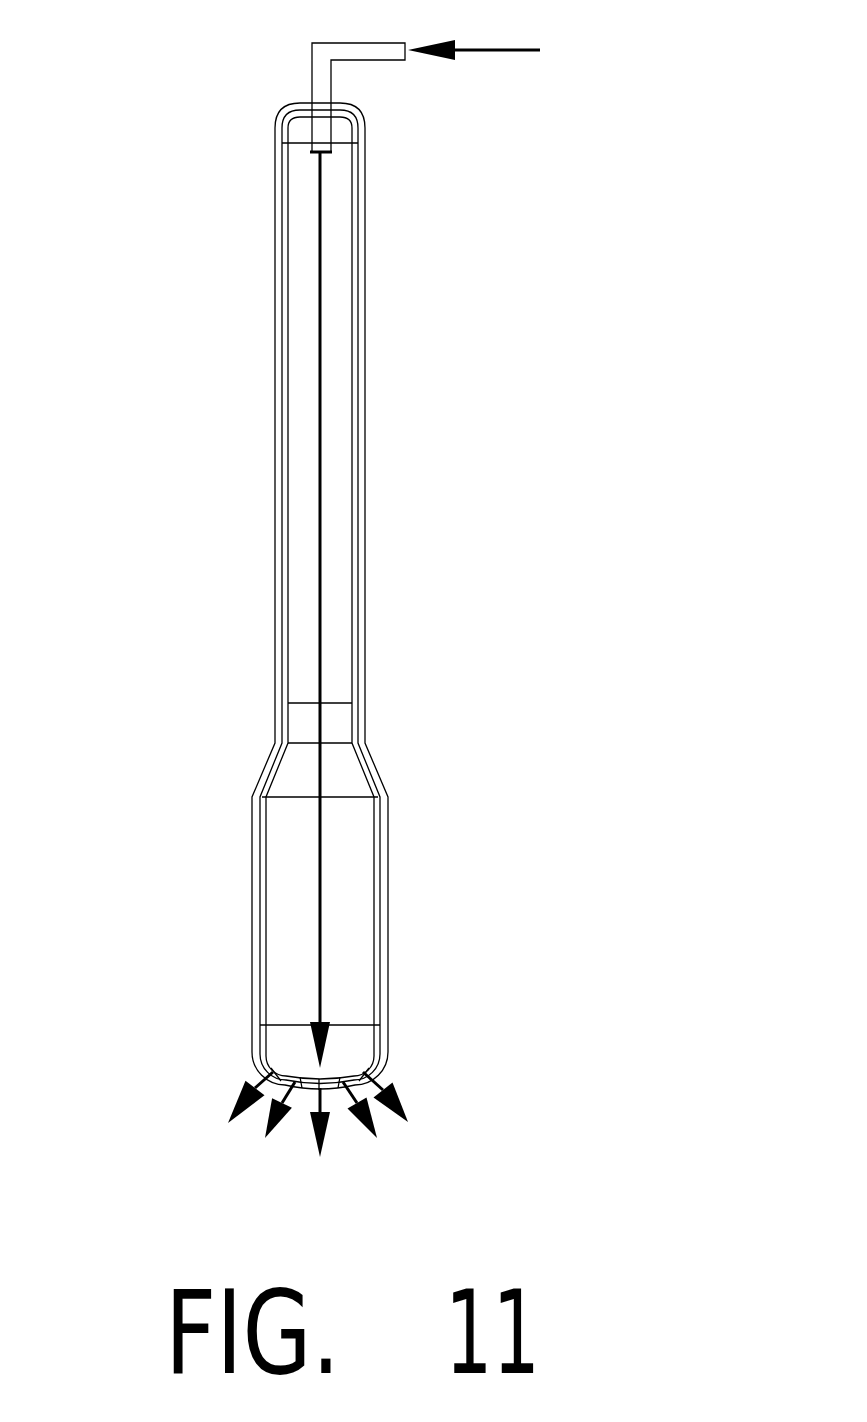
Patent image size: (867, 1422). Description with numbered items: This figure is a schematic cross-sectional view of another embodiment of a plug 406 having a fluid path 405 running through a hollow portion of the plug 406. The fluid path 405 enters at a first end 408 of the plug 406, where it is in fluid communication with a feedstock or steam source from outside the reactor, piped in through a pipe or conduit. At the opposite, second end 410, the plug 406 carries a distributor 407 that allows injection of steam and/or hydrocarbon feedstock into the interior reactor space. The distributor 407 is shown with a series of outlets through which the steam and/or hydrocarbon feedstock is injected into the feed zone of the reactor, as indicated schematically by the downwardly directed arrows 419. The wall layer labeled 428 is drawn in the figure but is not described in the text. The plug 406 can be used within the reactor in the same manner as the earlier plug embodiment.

The first end 408 is at (273, 182).
The plug 406 is at (367, 383).
The fluid path 405 is at (320, 590).
The second end 410 is at (253, 928).
The inner tube wall 428 is at (388, 952).
The downwardly directed arrows 419 is at (273, 1087).
The distributor 407 is at (367, 1070).